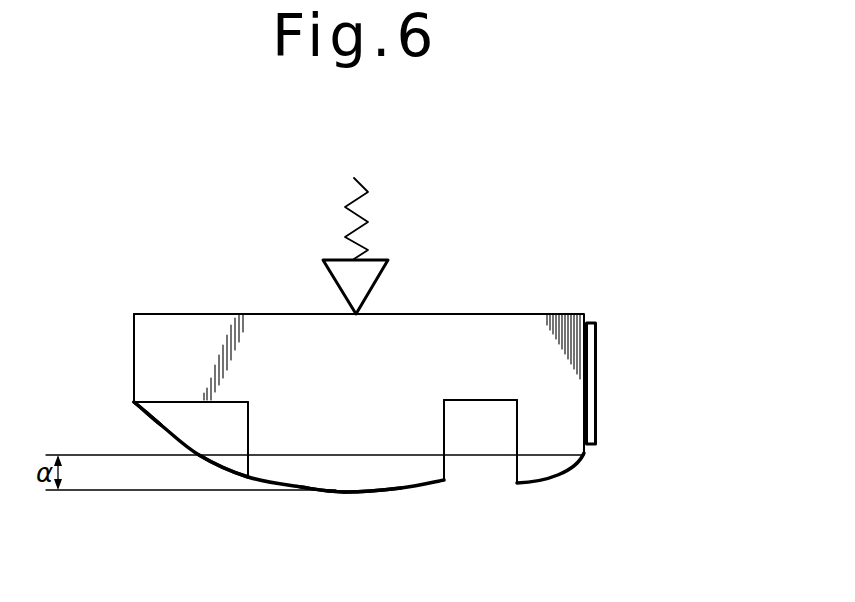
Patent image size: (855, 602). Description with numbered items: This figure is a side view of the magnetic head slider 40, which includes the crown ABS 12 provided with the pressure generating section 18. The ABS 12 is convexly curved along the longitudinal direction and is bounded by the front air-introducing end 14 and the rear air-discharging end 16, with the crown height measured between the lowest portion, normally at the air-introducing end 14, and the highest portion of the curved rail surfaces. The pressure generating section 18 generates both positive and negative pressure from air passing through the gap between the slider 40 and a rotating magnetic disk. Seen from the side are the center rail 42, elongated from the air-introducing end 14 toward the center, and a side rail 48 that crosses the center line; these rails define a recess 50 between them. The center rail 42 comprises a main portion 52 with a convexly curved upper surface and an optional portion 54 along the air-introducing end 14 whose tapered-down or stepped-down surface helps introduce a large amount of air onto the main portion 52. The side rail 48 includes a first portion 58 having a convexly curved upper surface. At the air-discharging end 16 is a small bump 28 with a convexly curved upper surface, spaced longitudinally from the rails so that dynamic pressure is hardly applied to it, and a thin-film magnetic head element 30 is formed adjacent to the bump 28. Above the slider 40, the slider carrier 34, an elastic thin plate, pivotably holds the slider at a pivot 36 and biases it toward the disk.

The ABS 12 is at (408, 500).
The air-introducing end 14 is at (137, 404).
The air-discharging end 16 is at (585, 455).
The pressure generating section 18 is at (273, 500).
The bump 28 is at (547, 460).
The thin-film magnetic head element 30 is at (590, 400).
The slider carrier 34 is at (340, 279).
The pivot 36 is at (370, 312).
The magnetic head slider 40 is at (484, 224).
The center rail 42 is at (203, 460).
The side rail 48 is at (312, 494).
The recess 50 is at (467, 402).
The main portion 52 is at (234, 460).
The optional portion 54 is at (165, 424).
The first portion 58 is at (358, 472).